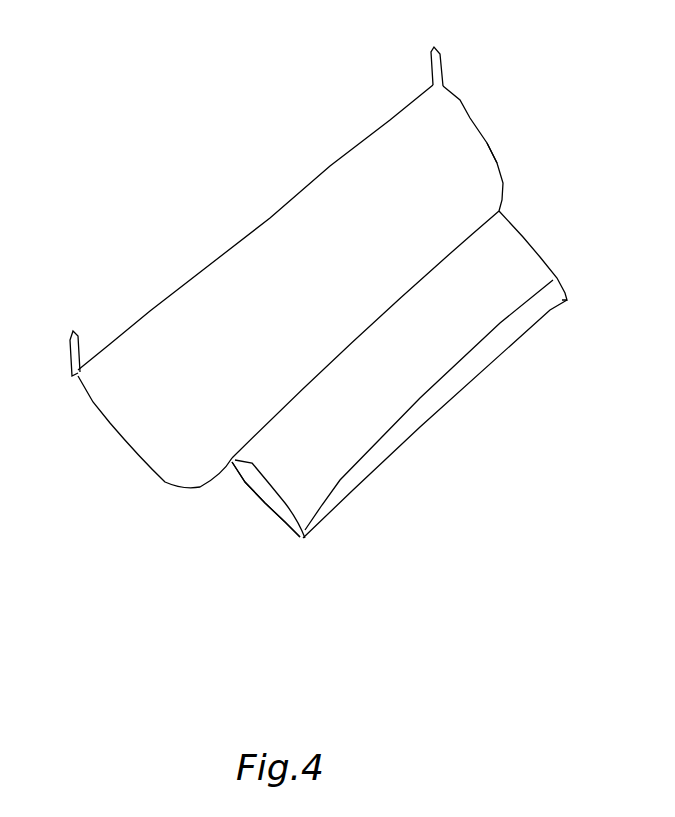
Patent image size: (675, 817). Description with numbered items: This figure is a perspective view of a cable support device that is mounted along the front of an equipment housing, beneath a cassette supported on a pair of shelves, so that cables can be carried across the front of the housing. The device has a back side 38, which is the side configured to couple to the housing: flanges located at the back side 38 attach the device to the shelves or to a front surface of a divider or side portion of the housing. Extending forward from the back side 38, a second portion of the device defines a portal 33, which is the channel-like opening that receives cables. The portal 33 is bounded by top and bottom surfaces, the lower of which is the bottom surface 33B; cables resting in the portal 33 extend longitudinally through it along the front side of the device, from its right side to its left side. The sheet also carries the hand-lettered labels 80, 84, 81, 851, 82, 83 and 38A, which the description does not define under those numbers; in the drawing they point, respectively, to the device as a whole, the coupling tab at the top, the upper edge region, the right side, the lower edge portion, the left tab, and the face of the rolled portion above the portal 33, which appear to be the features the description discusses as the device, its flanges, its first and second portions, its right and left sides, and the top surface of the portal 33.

The sheet assembly 80 is at (153, 536).
The back side 38 is at (265, 186).
The top tab 84 is at (436, 61).
The right edge 81 is at (523, 117).
The edge portion 851 is at (528, 153).
The lower right edge 82 is at (553, 240).
The left tab 83 is at (78, 447).
The rolled portion 38A is at (463, 320).
The bottom surface 33B is at (373, 472).
The portal 33 is at (267, 503).